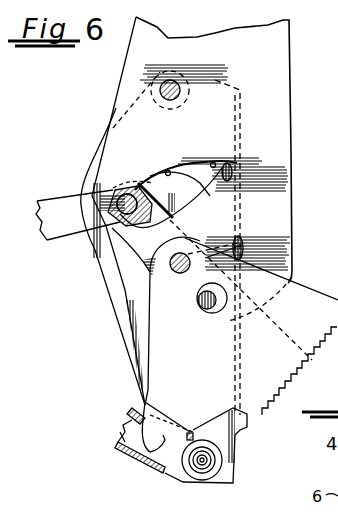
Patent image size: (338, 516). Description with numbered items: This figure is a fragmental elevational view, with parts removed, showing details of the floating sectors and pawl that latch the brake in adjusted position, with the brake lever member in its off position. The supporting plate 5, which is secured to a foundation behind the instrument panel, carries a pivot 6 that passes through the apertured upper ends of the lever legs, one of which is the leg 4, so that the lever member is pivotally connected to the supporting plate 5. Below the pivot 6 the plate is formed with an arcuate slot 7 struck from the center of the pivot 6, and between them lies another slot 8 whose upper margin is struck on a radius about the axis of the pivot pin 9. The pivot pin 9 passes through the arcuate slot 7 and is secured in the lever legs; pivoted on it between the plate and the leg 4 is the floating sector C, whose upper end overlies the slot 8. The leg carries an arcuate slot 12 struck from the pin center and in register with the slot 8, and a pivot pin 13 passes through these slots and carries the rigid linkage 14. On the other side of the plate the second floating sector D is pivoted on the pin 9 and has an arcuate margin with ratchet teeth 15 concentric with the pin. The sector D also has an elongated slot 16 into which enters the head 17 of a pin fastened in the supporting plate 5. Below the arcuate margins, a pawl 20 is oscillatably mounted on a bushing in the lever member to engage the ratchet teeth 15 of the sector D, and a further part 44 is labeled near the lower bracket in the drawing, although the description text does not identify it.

The leg 4 is at (229, 165).
The supporting plate 5 is at (280, 80).
The pivot 6 is at (167, 82).
The arcuate slot 7 is at (240, 243).
The slot 8 is at (213, 162).
The pivot pin 9 is at (180, 276).
The arcuate slot 12 is at (168, 170).
The pivot pin 13 is at (117, 190).
The rigid linkage 14 is at (50, 232).
The ratchet teeth 15 is at (274, 416).
The elongated slot 16 is at (199, 305).
The head 17 is at (205, 312).
The pawl 20 is at (163, 463).
The mounting plate edge 44 is at (126, 444).
The floating sector C is at (138, 298).
The floating sector D is at (298, 291).